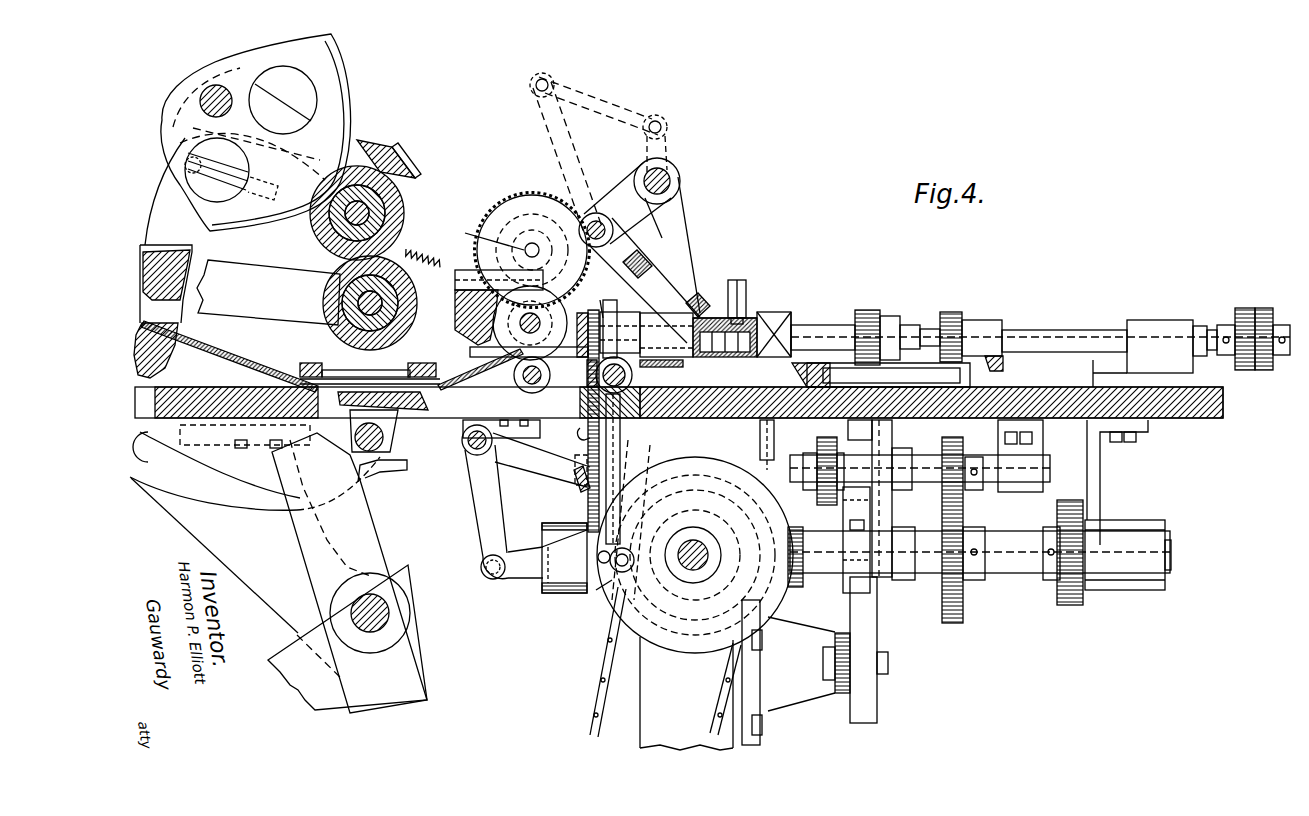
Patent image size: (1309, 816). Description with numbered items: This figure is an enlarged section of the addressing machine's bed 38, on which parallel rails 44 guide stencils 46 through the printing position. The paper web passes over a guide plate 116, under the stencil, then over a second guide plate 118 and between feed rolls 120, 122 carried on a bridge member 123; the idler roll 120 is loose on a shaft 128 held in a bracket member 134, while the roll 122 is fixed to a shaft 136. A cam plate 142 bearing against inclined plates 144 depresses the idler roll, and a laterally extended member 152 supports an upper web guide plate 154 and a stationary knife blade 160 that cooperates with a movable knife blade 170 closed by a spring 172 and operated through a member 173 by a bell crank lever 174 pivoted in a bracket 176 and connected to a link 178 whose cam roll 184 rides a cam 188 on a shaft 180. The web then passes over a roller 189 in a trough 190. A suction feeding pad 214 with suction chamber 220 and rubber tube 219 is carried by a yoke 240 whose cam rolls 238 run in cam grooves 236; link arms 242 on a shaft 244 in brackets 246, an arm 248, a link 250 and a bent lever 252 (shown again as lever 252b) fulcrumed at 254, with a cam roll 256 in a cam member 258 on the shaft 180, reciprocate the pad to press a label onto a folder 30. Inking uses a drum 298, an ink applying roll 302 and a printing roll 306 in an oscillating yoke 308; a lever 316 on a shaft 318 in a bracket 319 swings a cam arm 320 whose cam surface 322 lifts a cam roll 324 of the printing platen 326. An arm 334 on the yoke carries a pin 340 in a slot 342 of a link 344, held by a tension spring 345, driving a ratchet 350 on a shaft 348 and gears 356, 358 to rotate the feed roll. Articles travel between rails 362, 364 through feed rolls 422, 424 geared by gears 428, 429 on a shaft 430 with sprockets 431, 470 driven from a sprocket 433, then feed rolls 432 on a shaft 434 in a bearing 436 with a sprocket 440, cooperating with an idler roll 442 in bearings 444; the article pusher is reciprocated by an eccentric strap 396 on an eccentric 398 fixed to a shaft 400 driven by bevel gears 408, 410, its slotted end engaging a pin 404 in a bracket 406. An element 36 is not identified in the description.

The inking drum 298 is at (350, 90).
The screw or pin 340 is at (217, 169).
The slot 342 is at (240, 174).
The upwardly extending arm 334 is at (155, 224).
The ink applying roll 302 is at (398, 205).
The printing roll 306 is at (414, 303).
The oscillating yoke 308 is at (281, 275).
The link 344 is at (437, 232).
The tension spring 345 is at (415, 242).
The shaft 348 is at (481, 233).
The ratchet 350 is at (520, 212).
The gear 356 is at (531, 200).
The inclined plates 144 is at (528, 241).
The cam plate 142 is at (456, 277).
The bridge member 123 is at (462, 328).
The upper web guide plate 154 is at (530, 323).
The shaft 136 is at (523, 323).
The gear 358 is at (546, 323).
The feed roll 122 is at (513, 347).
The guide plate 116 is at (258, 372).
The second guide plate 118 is at (460, 376).
The rails 44 is at (312, 363).
The stencils 46 is at (388, 370).
The bar 36 is at (343, 372).
The link 250 is at (608, 99).
The bent lever 252 is at (553, 137).
The arm 248 is at (676, 144).
The shaft 244 is at (677, 177).
The link arms 242 is at (622, 186).
The upstanding brackets 246 is at (680, 225).
The bracket member 134 is at (650, 280).
The gear 428 is at (598, 320).
The stationary knife blade 160 is at (600, 300).
The laterally extended member 152 is at (597, 314).
The trough 190 is at (595, 367).
The movable knife blade 170 is at (598, 379).
The fulcrum 254 is at (632, 318).
The roller 189 is at (666, 340).
The cam rolls 238 is at (720, 318).
The reciprocating yoke 240 is at (681, 292).
The rubber tube 219 is at (748, 289).
The suction feeding pad 214 is at (766, 314).
The suction chamber 220 is at (775, 328).
The cam grooves 236 is at (798, 332).
The rail 362 is at (800, 343).
The feed rolls 432 is at (866, 310).
The feed roll 422 is at (891, 316).
The idler roll 442 is at (912, 364).
The rail 364 is at (1002, 358).
The shaft 434 is at (1058, 330).
The bearing 436 is at (1078, 343).
The sprocket 440 is at (1237, 318).
The bearings 444 is at (820, 394).
The folder or circular 30 is at (811, 371).
The bed or table 38 is at (1060, 396).
The cam surface 322 is at (360, 426).
The printing platen 326 is at (410, 400).
The shaft 128 is at (519, 383).
The feed roll 120 is at (501, 416).
The bracket 319 is at (255, 529).
The cam arm 320 is at (372, 556).
The cam roll 324 is at (407, 463).
The lever 316 is at (293, 648).
The shaft 318 is at (385, 610).
The bracket 176 is at (462, 438).
The bell crank lever 174 is at (468, 508).
The spring 172 is at (532, 466).
The member 173 is at (578, 432).
The gear 429 is at (586, 502).
The link 178 is at (548, 572).
The cam roll 256 is at (598, 555).
The cam roll 184 is at (580, 590).
The cam 188 is at (612, 585).
The link 252b is at (645, 465).
The cam member 258 is at (682, 640).
The shaft 180 is at (692, 540).
The bevel gear 408 is at (660, 602).
The bevel gear 410 is at (703, 612).
The shaft 430 is at (766, 462).
The sprocket 470 is at (822, 450).
The eccentric strap 396 is at (862, 447).
The sprocket 431 is at (965, 447).
The eccentric 398 is at (843, 519).
The collar 424 is at (893, 520).
The shaft 400 is at (830, 560).
The sprocket 433 is at (970, 530).
The bracket 406 is at (809, 692).
The pin 404 is at (885, 672).